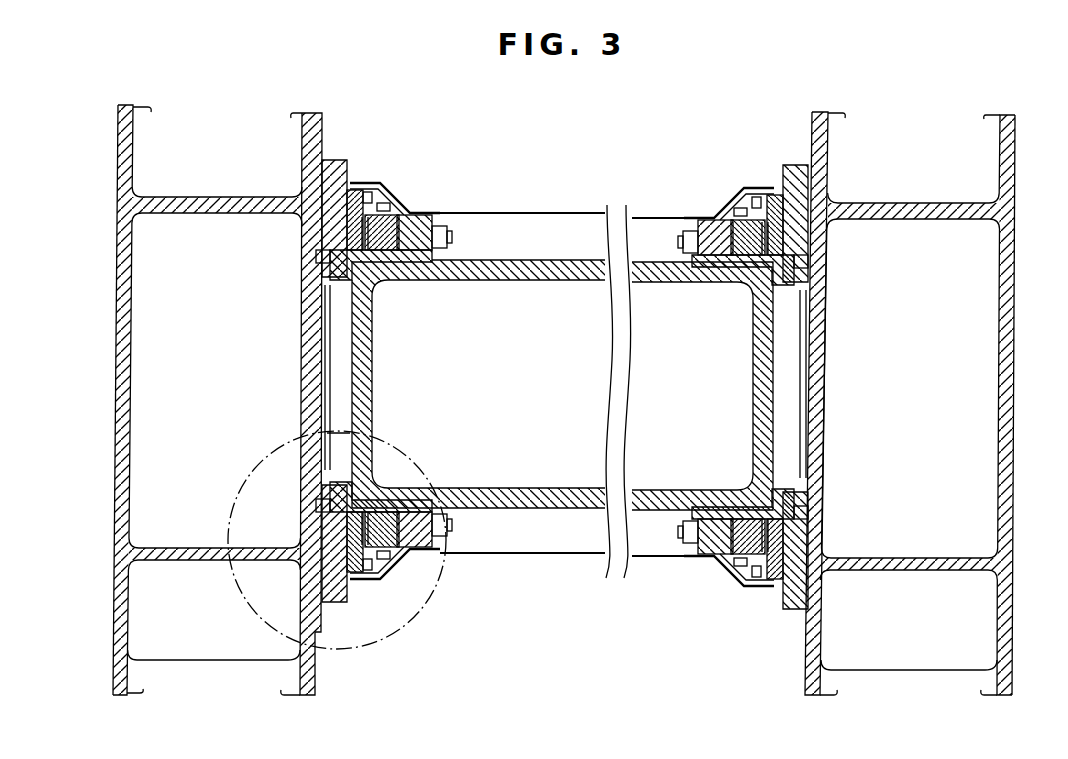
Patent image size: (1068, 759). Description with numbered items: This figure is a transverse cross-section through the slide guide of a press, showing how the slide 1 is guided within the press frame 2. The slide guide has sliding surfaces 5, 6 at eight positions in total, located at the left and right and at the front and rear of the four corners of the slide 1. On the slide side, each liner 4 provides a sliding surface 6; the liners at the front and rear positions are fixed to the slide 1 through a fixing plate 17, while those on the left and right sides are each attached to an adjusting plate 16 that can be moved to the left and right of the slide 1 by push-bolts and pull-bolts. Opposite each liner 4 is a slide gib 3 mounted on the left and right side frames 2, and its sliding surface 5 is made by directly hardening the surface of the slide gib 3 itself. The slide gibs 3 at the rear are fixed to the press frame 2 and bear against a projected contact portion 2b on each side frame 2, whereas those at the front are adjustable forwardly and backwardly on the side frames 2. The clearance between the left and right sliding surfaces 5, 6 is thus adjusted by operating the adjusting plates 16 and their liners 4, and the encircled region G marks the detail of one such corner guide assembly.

The slide 1 is at (568, 478).
The press frame 2 is at (148, 580).
The projected contact portion 2b is at (303, 168).
The slide gib 3 is at (300, 202).
The liner 4 is at (395, 207).
The sliding surface 5 is at (350, 186).
The sliding surface 6 is at (569, 382).
The adjusting plate 16 is at (396, 265).
The fixing plate 17 is at (325, 312).
The detail region circle G is at (360, 648).